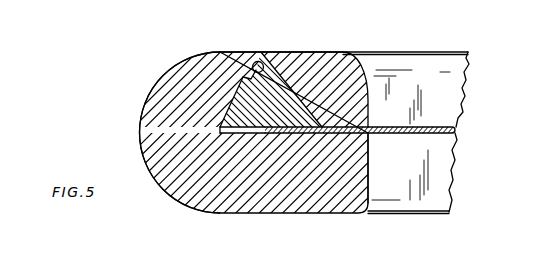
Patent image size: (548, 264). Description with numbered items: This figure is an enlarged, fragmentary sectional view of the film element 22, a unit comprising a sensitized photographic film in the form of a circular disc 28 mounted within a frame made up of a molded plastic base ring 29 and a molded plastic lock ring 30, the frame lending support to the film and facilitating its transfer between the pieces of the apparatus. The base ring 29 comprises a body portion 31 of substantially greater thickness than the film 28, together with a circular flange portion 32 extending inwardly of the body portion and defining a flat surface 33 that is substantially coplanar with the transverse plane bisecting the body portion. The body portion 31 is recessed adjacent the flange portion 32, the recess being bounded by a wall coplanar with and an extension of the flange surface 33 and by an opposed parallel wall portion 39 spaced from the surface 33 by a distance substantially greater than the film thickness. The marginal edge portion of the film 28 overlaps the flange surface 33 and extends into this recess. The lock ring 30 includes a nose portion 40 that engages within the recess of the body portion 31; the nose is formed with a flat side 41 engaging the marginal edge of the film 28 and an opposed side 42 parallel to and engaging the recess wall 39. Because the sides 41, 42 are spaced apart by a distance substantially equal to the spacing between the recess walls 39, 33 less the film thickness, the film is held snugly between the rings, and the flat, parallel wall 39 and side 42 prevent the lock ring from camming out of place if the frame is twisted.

The film element 22 is at (145, 97).
The circular disc 28 is at (458, 131).
The molded plastic base ring 29 is at (146, 134).
The molded plastic lock ring 30 is at (333, 52).
The body portion 31 is at (183, 90).
The circular flange portion 32 is at (328, 192).
The flat surface 33 is at (368, 138).
The wall portion 39 is at (258, 61).
The nose portion 40 is at (242, 98).
The flat side 41 is at (321, 127).
The opposed side 42 is at (262, 79).